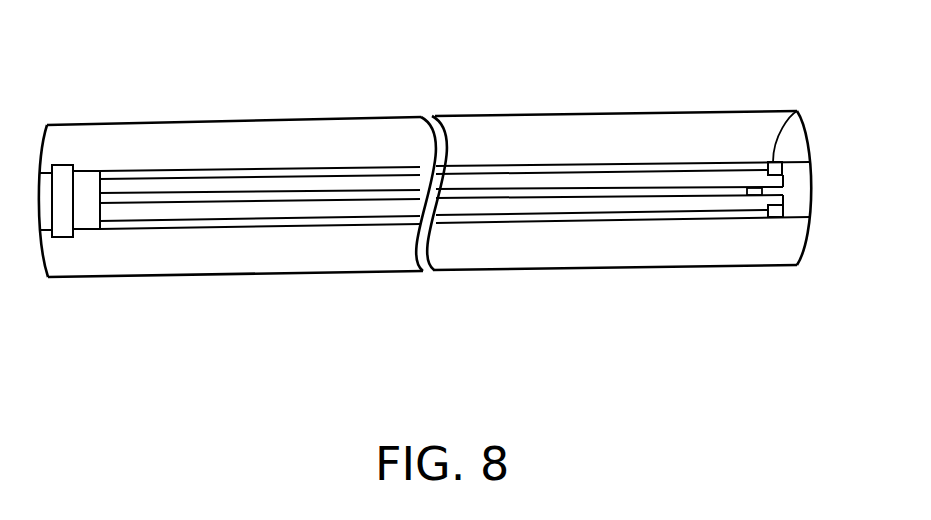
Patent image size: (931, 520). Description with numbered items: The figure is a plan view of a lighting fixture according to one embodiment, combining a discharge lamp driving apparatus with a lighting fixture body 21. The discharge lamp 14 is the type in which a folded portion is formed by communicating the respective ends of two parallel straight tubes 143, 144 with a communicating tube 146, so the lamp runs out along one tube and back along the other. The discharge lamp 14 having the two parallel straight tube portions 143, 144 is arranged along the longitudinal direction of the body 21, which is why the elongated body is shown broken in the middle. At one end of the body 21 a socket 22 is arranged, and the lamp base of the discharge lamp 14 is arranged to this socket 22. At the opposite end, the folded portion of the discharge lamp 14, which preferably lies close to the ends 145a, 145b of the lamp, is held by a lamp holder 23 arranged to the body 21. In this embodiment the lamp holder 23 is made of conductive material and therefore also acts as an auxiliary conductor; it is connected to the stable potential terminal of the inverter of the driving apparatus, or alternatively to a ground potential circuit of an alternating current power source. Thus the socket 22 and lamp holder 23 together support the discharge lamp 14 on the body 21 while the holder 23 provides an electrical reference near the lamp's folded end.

The discharge lamp 14 is at (330, 177).
The lighting fixture body 21 is at (637, 128).
The socket 22 is at (62, 170).
The lamp holder 23 is at (797, 111).
The straight tube 143 is at (502, 180).
The straight tube 144 is at (506, 203).
The end 145a is at (782, 167).
The end 145b is at (783, 209).
The communicating tube 146 is at (755, 195).